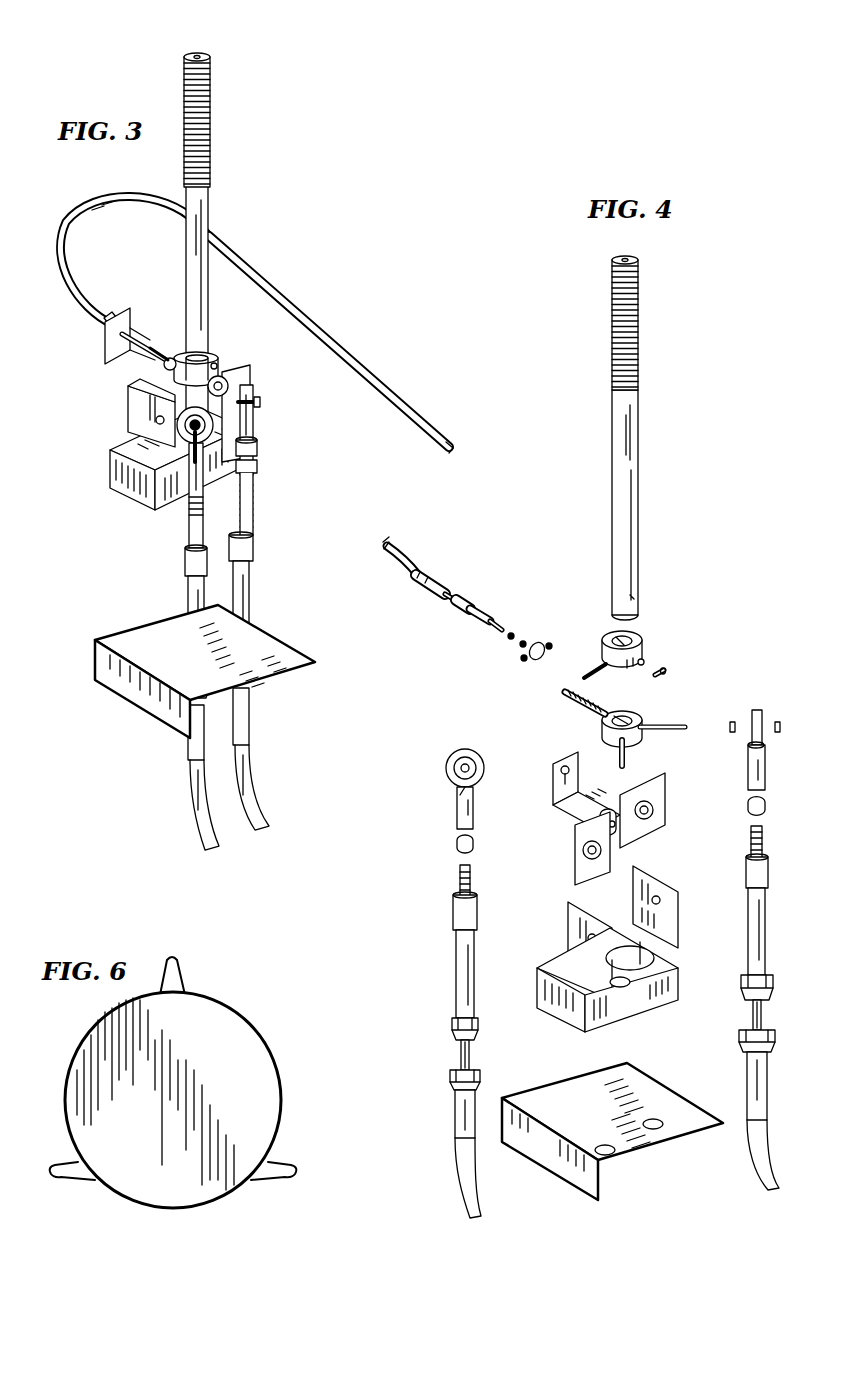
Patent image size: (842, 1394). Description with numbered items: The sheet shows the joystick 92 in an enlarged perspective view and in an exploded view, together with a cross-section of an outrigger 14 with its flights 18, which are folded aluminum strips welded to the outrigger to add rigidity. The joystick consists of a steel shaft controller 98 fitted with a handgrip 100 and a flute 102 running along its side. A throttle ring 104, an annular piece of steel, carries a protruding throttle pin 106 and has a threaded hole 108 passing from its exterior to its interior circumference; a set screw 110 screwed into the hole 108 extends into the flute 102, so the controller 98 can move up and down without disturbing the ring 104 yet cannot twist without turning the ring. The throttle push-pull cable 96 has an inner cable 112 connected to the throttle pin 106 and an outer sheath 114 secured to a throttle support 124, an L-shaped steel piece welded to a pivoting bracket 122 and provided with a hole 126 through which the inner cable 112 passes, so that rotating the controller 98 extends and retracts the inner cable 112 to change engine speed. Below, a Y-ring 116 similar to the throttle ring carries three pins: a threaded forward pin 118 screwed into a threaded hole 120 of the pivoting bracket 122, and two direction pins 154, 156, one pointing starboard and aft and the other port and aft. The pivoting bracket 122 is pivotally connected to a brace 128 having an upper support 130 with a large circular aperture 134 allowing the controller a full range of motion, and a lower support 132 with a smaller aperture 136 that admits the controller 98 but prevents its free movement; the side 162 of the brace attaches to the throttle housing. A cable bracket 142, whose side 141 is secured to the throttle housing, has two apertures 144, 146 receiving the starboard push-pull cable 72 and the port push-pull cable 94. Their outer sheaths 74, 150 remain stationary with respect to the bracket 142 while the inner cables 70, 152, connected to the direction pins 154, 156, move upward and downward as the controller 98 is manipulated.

In FIG. 6, the outrigger 14 is at (264, 1014).
In FIG. 6, the flights 18 is at (180, 966).
In FIG. 3, the inner cable 70 is at (254, 488).
In FIG. 4, the inner cable 70 is at (762, 1022).
In FIG. 3, the starboard push-pull cable 72 is at (264, 844).
In FIG. 4, the starboard push-pull cable 72 is at (782, 1200).
In FIG. 3, the outer sheath 74 is at (250, 768).
In FIG. 4, the outer sheath 74 is at (770, 1134).
In FIG. 3, the joystick 92 is at (300, 220).
In FIG. 4, the joystick 92 is at (728, 440).
In FIG. 3, the port push-pull cable 94 is at (160, 850).
In FIG. 4, the port push-pull cable 94 is at (447, 1228).
In FIG. 3, the throttle push-pull cable 96 is at (70, 292).
In FIG. 4, the throttle push-pull cable 96 is at (396, 548).
In FIG. 3, the controller 98 is at (208, 206).
In FIG. 4, the controller 98 is at (636, 438).
In FIG. 3, the handgrip 100 is at (212, 72).
In FIG. 4, the handgrip 100 is at (640, 320).
In FIG. 3, the flute 102 is at (214, 292).
In FIG. 4, the flute 102 is at (640, 546).
In FIG. 3, the throttle ring 104 is at (214, 345).
In FIG. 4, the throttle ring 104 is at (636, 633).
In FIG. 3, the throttle pin 106 is at (166, 352).
In FIG. 4, the throttle pin 106 is at (586, 674).
In FIG. 4, the threaded hole 108 is at (648, 661).
In FIG. 3, the set screw 110 is at (218, 366).
In FIG. 4, the set screw 110 is at (668, 679).
In FIG. 3, the inner cable 112 is at (150, 369).
In FIG. 4, the inner cable 112 is at (450, 605).
In FIG. 3, the outer sheath 114 is at (80, 314).
In FIG. 4, the outer sheath 114 is at (412, 578).
In FIG. 3, the Y-ring 116 is at (258, 446).
In FIG. 4, the Y-ring 116 is at (655, 746).
In FIG. 4, the forward pin 118 is at (595, 712).
In FIG. 3, the threaded hole 120 is at (202, 409).
In FIG. 4, the threaded hole 120 is at (625, 840).
In FIG. 4, the pivoting bracket 122 is at (560, 848).
In FIG. 3, the throttle support 124 is at (105, 345).
In FIG. 4, the throttle support 124 is at (568, 808).
In FIG. 4, the hole 126 is at (552, 795).
In FIG. 3, the brace 128 is at (76, 446).
In FIG. 4, the brace 128 is at (558, 943).
In FIG. 3, the upper support 130 is at (122, 480).
In FIG. 4, the upper support 130 is at (556, 984).
In FIG. 3, the lower support 132 is at (166, 516).
In FIG. 4, the lower support 132 is at (622, 1002).
In FIG. 4, the circular aperture 134 is at (658, 926).
In FIG. 4, the aperture 136 is at (668, 978).
In FIG. 3, the side 141 is at (156, 724).
In FIG. 4, the side 141 is at (572, 1168).
In FIG. 3, the cable bracket 142 is at (162, 665).
In FIG. 4, the cable bracket 142 is at (570, 1125).
In FIG. 4, the aperture 144 is at (664, 1124).
In FIG. 4, the aperture 146 is at (612, 1155).
In FIG. 3, the outer sheath 150 is at (190, 818).
In FIG. 4, the outer sheath 150 is at (458, 1170).
In FIG. 3, the inner cable 152 is at (210, 510).
In FIG. 4, the inner cable 152 is at (460, 1050).
In FIG. 3, the direction pin 154 is at (262, 408).
In FIG. 4, the direction pin 154 is at (690, 730).
In FIG. 3, the direction pin 156 is at (244, 458).
In FIG. 4, the direction pin 156 is at (628, 766).
In FIG. 3, the side 162 is at (140, 492).
In FIG. 4, the side 162 is at (566, 1012).